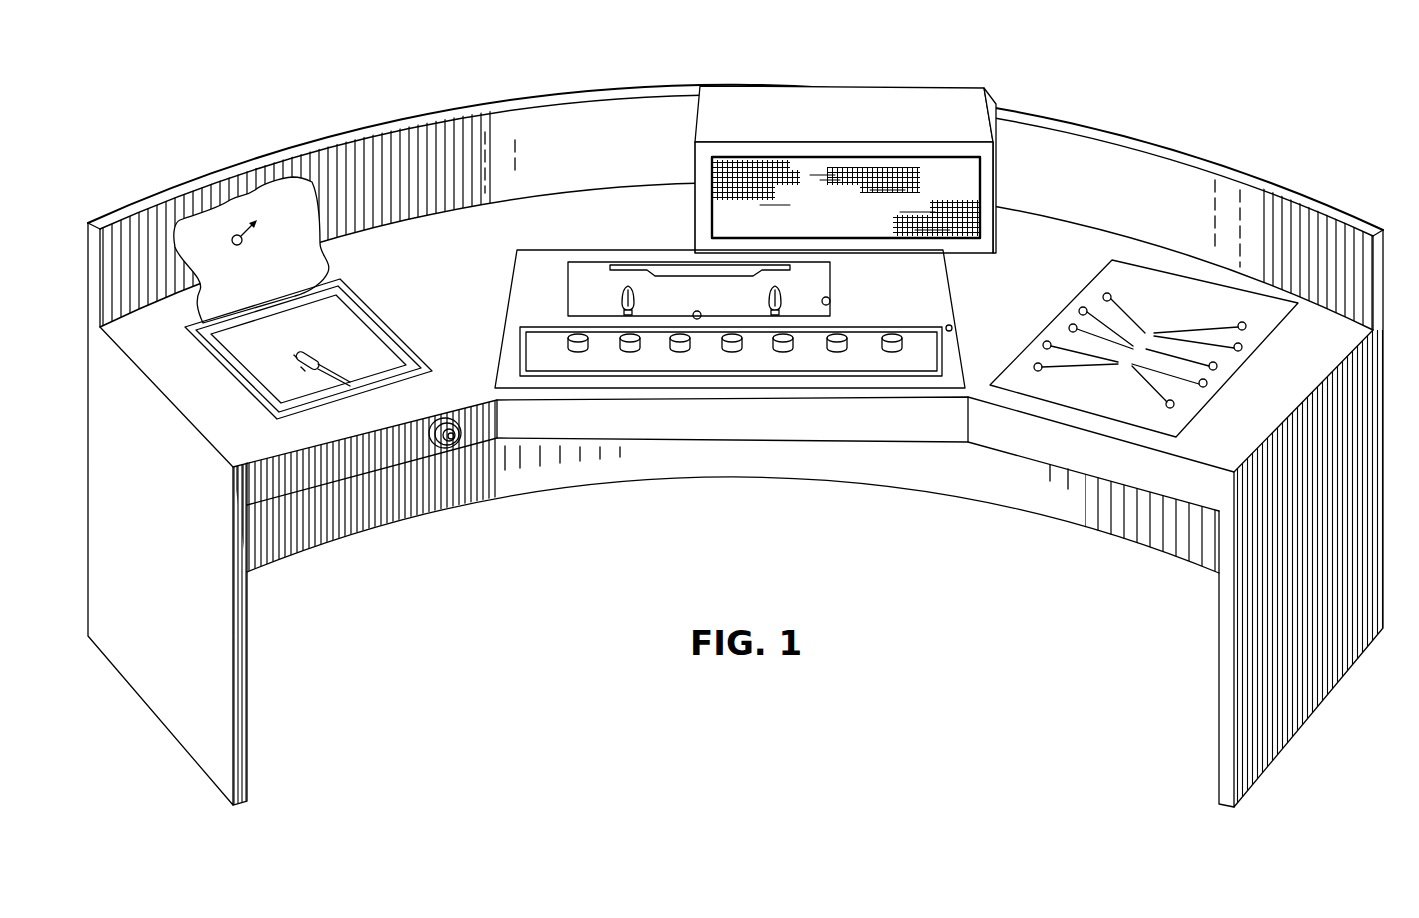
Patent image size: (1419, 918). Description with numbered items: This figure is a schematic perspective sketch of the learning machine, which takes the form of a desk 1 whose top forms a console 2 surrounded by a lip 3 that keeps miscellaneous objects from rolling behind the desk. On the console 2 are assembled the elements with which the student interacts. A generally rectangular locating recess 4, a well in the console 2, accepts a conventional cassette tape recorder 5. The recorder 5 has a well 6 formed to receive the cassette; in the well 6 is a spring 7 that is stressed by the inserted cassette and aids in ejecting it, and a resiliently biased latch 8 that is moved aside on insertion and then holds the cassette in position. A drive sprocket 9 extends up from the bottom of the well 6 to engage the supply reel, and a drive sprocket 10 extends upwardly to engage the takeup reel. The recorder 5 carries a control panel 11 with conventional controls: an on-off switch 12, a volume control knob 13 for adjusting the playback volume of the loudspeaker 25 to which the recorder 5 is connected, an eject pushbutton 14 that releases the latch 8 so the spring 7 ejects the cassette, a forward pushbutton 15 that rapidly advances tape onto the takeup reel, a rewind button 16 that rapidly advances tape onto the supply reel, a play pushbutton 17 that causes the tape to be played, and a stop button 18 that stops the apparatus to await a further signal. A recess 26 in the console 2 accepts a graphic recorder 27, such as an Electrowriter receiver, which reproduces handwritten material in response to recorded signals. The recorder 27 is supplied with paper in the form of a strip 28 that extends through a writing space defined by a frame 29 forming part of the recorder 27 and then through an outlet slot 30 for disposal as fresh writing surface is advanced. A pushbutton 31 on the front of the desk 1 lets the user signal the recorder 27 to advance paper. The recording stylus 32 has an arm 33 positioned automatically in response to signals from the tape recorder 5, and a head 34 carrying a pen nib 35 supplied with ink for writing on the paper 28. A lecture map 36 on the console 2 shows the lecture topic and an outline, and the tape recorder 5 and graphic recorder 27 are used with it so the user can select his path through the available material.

The desk 1 is at (1340, 606).
The console 2 is at (1030, 315).
The lip 3 is at (1153, 180).
The locating recess 4 is at (953, 327).
The tape recorder 5 is at (923, 289).
The well 6 is at (830, 302).
The spring 7 is at (717, 273).
The latch 8 is at (696, 312).
The drive sprocket 9 is at (782, 297).
The drive sprocket 10 is at (622, 299).
The control panel 11 is at (927, 368).
The on-off switch 12 is at (567, 342).
The volume control knob 13 is at (622, 346).
The eject pushbutton 14 is at (673, 348).
The forward pushbutton 15 is at (721, 346).
The rewind button 16 is at (772, 346).
The play pushbutton 17 is at (824, 346).
The stop button 18 is at (883, 346).
The loudspeaker 25 is at (920, 97).
The recess 26 is at (384, 330).
The graphic recorder 27 is at (368, 359).
The paper strip 28 is at (220, 290).
The frame 29 is at (352, 306).
The outlet slot 30 is at (306, 276).
The pushbutton 31 is at (473, 450).
The recording stylus 32 is at (307, 380).
The arm 33 is at (340, 388).
The head 34 is at (320, 343).
The pen nib 35 is at (290, 365).
The lecture map 36 is at (1262, 357).